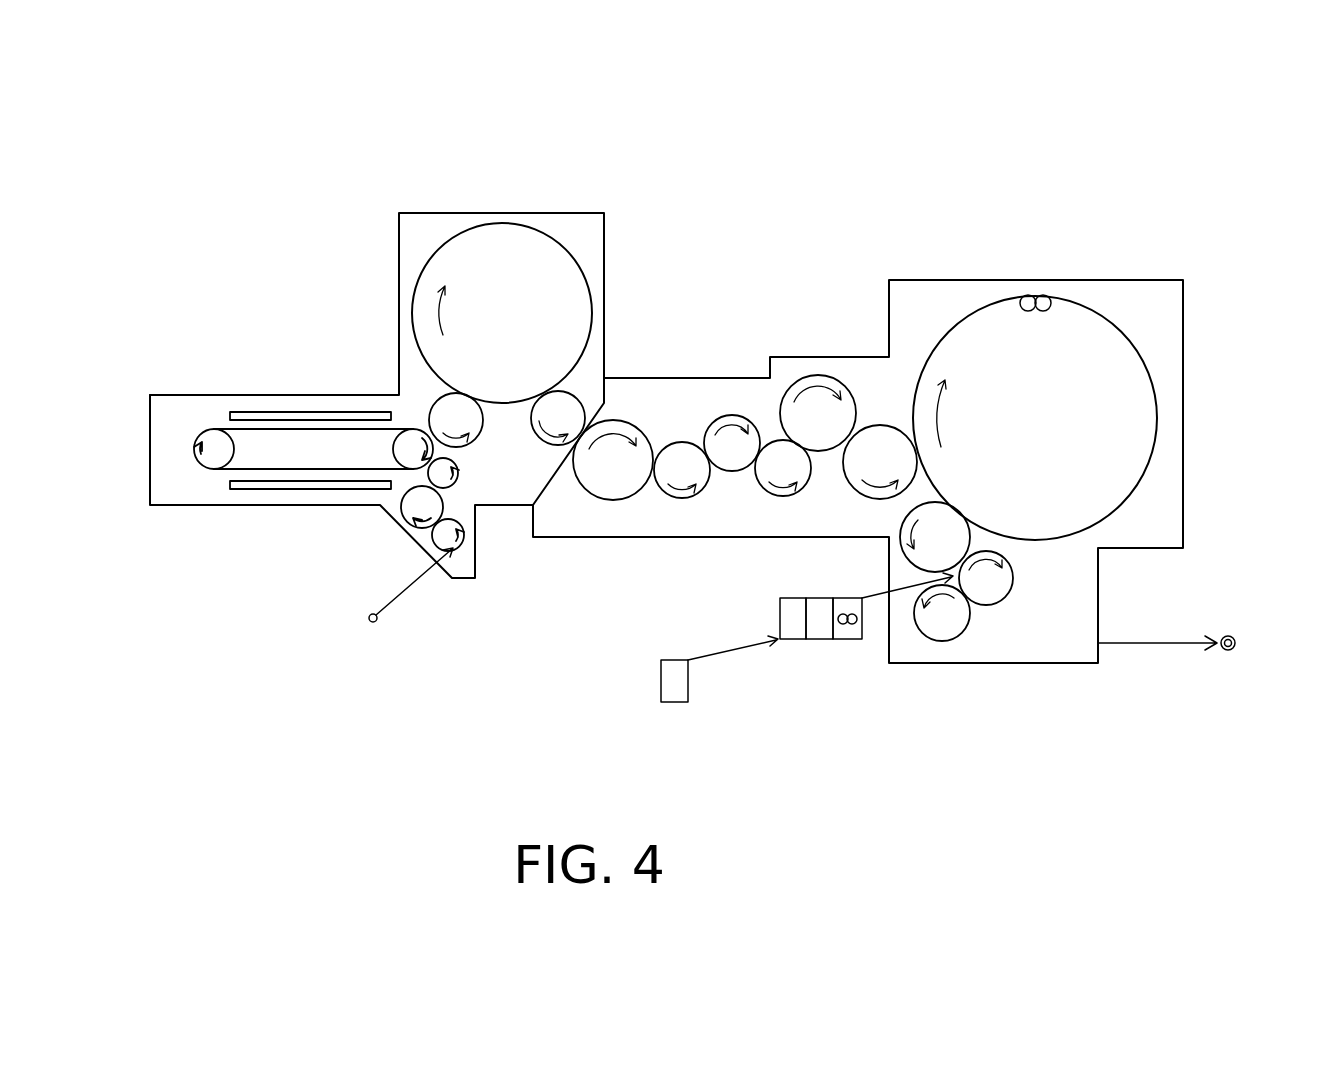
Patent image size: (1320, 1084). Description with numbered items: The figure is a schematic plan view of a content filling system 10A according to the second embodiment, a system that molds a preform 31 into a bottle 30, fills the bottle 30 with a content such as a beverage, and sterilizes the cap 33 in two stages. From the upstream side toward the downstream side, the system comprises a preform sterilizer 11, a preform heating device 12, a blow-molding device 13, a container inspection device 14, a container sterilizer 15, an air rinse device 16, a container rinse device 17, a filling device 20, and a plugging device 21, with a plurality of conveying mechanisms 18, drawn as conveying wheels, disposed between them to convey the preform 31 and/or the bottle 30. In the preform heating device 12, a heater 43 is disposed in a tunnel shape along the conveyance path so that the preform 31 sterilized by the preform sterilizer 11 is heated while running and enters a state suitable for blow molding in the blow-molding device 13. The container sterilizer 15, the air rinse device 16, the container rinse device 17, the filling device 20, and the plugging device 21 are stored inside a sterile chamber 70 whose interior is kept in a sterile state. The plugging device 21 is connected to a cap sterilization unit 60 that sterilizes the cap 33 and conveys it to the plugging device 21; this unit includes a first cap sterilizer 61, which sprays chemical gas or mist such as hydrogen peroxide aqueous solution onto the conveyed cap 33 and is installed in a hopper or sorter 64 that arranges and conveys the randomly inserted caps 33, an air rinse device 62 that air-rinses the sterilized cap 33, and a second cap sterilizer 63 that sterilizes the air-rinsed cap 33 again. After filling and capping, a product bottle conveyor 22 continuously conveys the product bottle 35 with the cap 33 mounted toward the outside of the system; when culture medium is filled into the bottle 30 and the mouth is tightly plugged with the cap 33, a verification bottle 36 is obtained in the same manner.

The content filling system 10A is at (1118, 195).
The preform sterilizer 11 is at (465, 535).
The preform heating device 12 is at (212, 465).
The blow-molding device 13 is at (566, 275).
The container inspection device 14 is at (568, 403).
The container sterilizer 15 is at (625, 425).
The air rinse device 16 is at (733, 418).
The container rinse device 17 is at (818, 378).
The conveying mechanism 18 is at (472, 440).
The filling device 20 is at (1145, 418).
The plugging device 21 is at (1010, 578).
The product bottle conveyor 22 is at (1100, 636).
The bottle 30 is at (1032, 295).
The preform 31 is at (373, 625).
The cap 33 is at (852, 626).
The product bottle 35 is at (1219, 687).
The verification bottle 36 is at (1225, 655).
The heater 43 is at (306, 412).
The cap sterilization unit 60 is at (784, 708).
The first cap sterilizer 61 is at (676, 702).
The air rinse device 62 is at (821, 640).
The second cap sterilizer 63 is at (795, 640).
The sorter 64 is at (670, 647).
The sterile chamber 70 is at (928, 280).